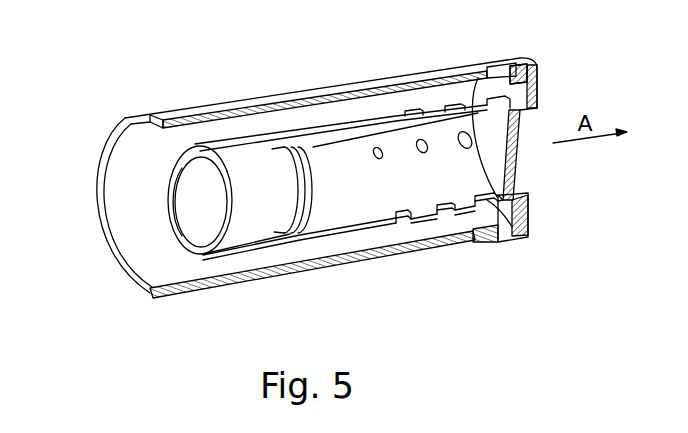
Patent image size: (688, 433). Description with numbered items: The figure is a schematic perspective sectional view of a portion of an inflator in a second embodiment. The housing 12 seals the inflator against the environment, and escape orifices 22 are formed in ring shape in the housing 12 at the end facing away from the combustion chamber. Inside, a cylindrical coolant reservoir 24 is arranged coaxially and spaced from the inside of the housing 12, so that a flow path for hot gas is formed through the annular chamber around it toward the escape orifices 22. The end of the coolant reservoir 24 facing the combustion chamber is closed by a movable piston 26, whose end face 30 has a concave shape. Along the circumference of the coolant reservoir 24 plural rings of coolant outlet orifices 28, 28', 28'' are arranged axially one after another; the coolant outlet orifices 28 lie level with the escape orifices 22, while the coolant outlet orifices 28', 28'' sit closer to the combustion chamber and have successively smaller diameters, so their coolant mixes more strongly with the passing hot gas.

The housing 12 is at (445, 72).
The escape orifices 22 is at (500, 66).
The coolant reservoir 24 is at (333, 163).
The movable piston 26 is at (242, 180).
The coolant outlet orifices 28 is at (500, 247).
The coolant outlet orifices 28' is at (458, 259).
The coolant outlet orifices 28'' is at (404, 266).
The end face 30 is at (203, 215).